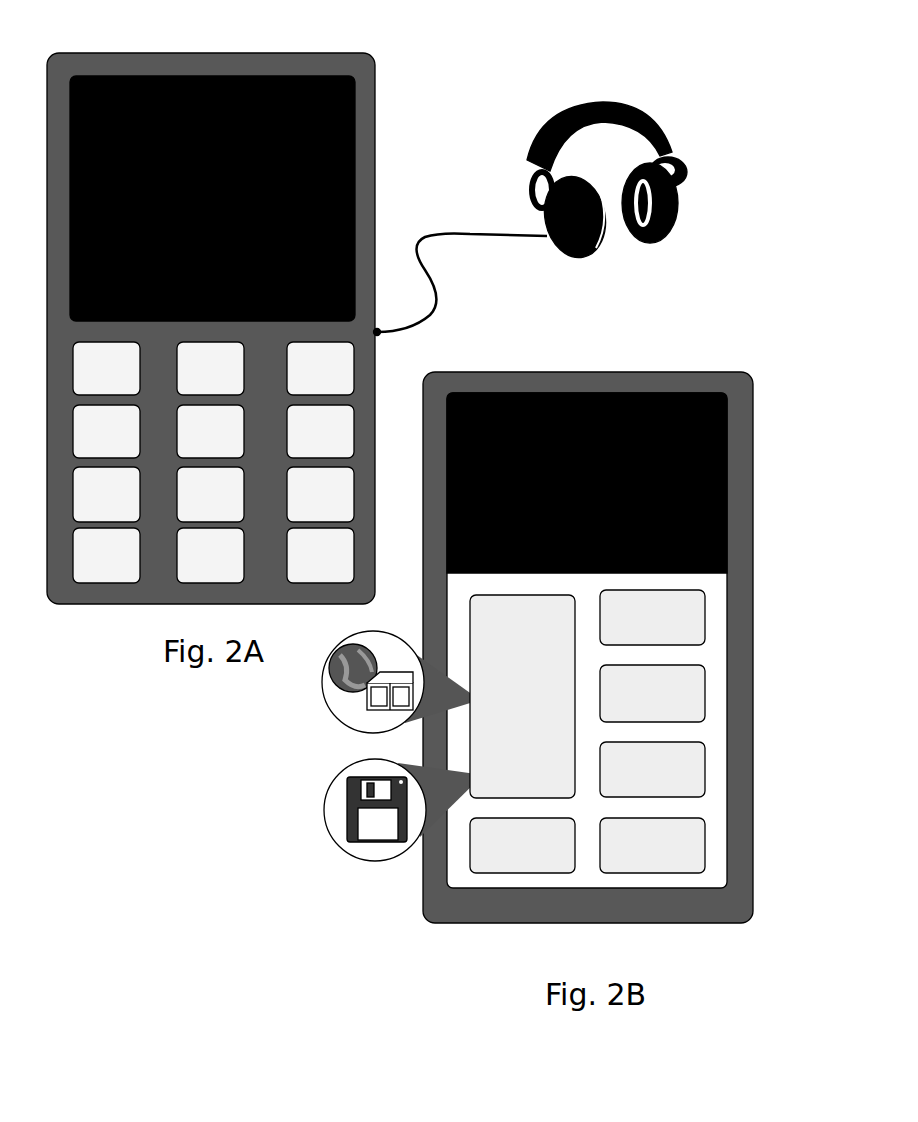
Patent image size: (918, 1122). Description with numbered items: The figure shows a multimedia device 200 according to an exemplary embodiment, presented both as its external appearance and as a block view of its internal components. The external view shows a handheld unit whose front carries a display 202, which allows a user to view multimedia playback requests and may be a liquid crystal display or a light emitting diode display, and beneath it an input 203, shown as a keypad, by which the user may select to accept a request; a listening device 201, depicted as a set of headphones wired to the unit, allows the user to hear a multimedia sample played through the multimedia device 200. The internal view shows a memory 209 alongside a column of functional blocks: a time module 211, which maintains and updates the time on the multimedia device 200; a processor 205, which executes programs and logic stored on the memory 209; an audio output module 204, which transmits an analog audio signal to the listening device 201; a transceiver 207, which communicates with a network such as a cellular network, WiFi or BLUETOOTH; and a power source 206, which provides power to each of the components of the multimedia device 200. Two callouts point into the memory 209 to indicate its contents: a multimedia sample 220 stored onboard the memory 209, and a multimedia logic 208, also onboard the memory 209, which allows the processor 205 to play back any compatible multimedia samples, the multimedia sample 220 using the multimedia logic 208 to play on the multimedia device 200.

In FIG. 2A, the multimedia device 200 is at (376, 106).
In FIG. 2B, the multimedia device 200 is at (488, 370).
In FIG. 2A, the listening device 201 is at (668, 150).
In FIG. 2A, the display 202 is at (353, 228).
In FIG. 2A, the input 203 is at (180, 585).
In FIG. 2B, the audio output module 204 is at (707, 767).
In FIG. 2B, the processor 205 is at (707, 685).
In FIG. 2B, the power source 206 is at (687, 873).
In FIG. 2B, the transceiver 207 is at (470, 866).
In FIG. 2B, the multimedia logic 208 is at (343, 820).
In FIG. 2B, the memory 209 is at (470, 747).
In FIG. 2B, the time module 211 is at (707, 617).
In FIG. 2B, the multimedia sample 220 is at (333, 678).